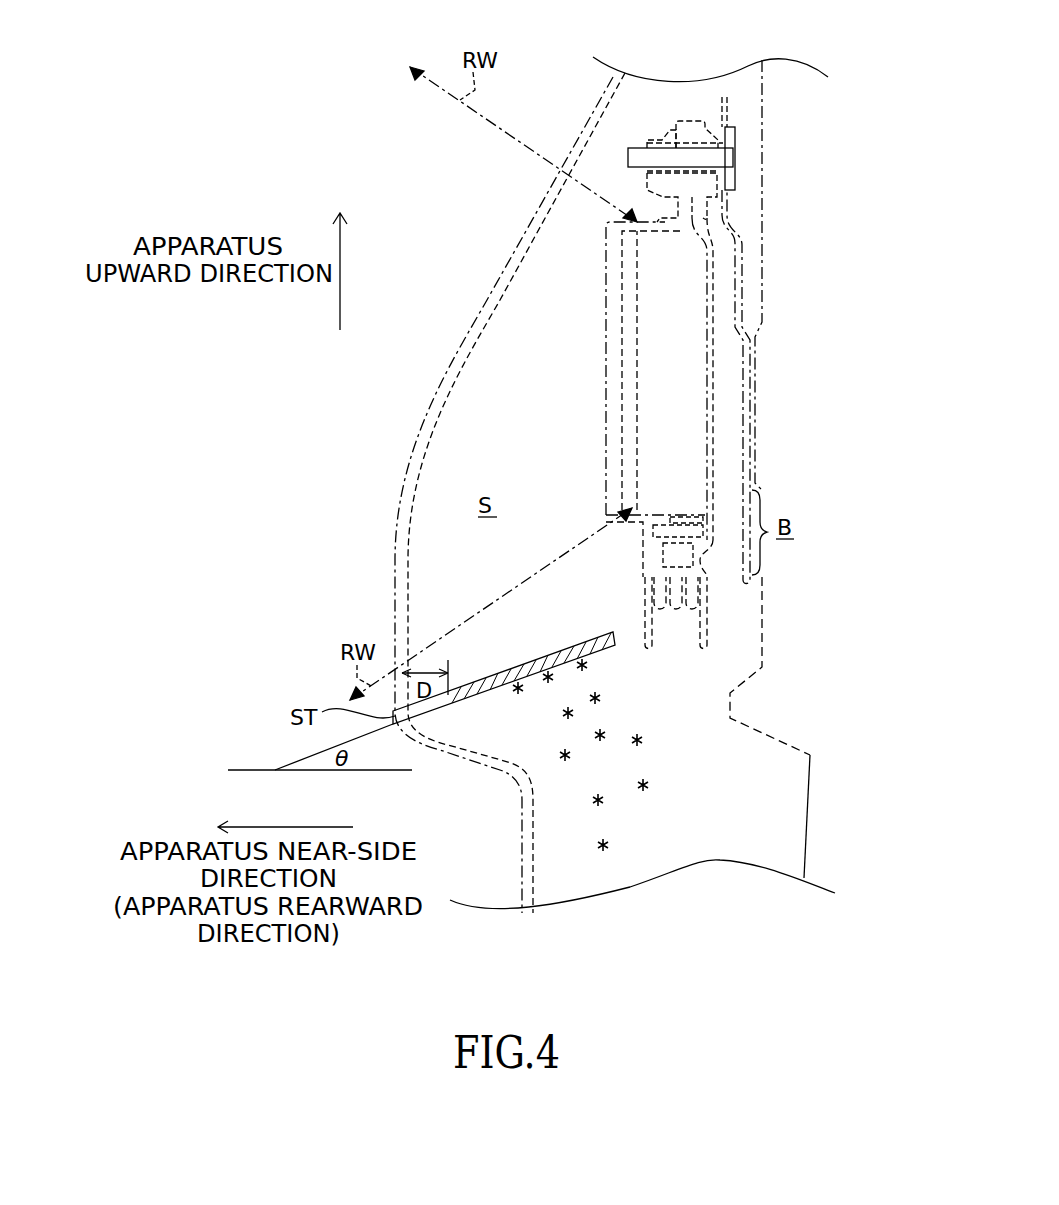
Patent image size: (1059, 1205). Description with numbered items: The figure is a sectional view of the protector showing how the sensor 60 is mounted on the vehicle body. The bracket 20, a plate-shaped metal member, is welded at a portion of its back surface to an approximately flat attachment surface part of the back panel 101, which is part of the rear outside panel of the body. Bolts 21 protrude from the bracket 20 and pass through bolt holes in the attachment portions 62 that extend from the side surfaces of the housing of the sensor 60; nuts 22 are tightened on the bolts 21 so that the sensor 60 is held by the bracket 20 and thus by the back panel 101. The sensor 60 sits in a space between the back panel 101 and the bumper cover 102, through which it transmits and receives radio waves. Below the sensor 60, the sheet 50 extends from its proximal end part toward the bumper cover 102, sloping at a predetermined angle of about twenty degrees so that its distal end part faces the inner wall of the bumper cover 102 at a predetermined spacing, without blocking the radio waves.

The bracket 20 is at (727, 218).
The bolts 21 is at (628, 156).
The nuts 22 is at (660, 140).
The sheet 50 is at (497, 688).
The sensor 60 is at (603, 447).
The attachment portions 62 is at (692, 122).
The back panel 101 is at (766, 142).
The bumper cover 102 is at (477, 320).